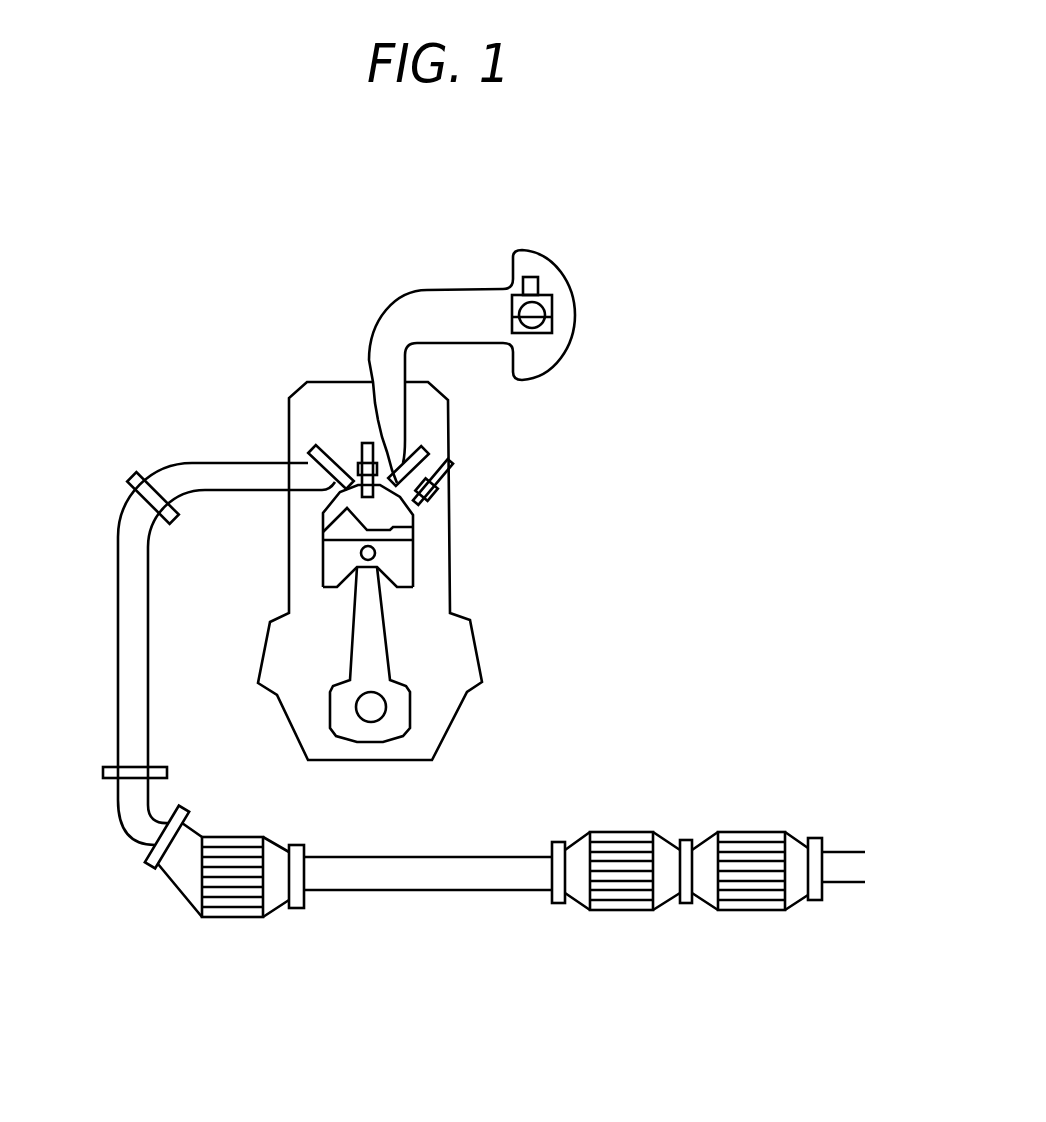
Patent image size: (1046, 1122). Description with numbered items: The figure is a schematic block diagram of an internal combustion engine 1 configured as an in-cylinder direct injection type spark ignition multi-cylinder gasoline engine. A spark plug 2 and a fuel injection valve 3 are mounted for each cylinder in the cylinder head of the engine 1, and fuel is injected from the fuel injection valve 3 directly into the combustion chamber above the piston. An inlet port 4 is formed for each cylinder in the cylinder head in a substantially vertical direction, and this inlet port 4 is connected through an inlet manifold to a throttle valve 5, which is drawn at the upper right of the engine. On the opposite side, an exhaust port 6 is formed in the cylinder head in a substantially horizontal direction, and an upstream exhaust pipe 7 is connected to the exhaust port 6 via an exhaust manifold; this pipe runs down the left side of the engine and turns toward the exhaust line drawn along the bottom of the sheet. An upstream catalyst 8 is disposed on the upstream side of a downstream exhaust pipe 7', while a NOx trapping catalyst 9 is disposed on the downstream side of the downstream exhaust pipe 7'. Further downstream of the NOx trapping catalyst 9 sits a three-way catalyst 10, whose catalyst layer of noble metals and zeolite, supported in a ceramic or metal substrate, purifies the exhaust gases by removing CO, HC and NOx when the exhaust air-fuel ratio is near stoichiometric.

The internal combustion engine 1 is at (307, 362).
The spark plug 2 is at (358, 449).
The fuel injection valve 3 is at (432, 494).
The inlet port 4 is at (402, 455).
The throttle valve 5 is at (552, 317).
The exhaust port 6 is at (305, 474).
The upstream exhaust pipe 7 is at (159, 665).
The downstream exhaust pipe 7' is at (428, 922).
The upstream catalyst 8 is at (231, 838).
The NOx trapping catalyst 9 is at (617, 913).
The three-way catalyst 10 is at (748, 913).